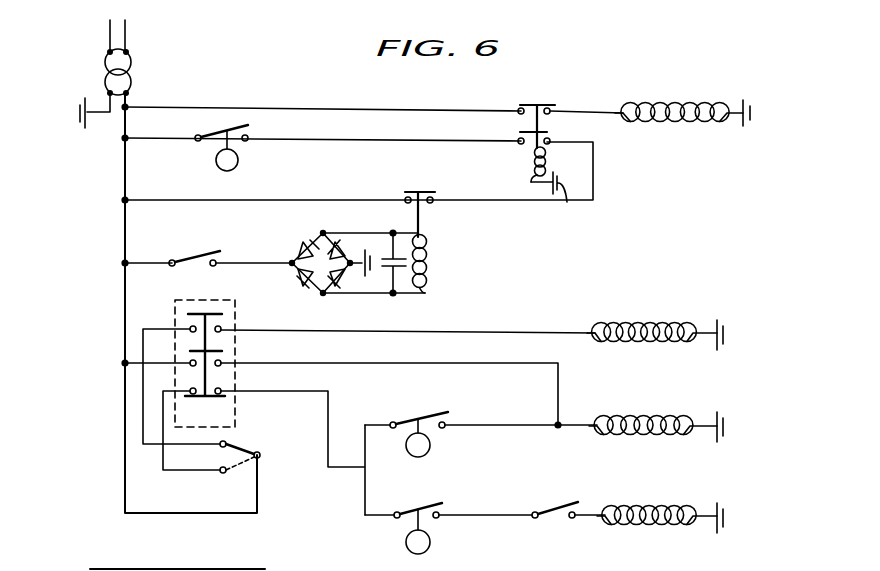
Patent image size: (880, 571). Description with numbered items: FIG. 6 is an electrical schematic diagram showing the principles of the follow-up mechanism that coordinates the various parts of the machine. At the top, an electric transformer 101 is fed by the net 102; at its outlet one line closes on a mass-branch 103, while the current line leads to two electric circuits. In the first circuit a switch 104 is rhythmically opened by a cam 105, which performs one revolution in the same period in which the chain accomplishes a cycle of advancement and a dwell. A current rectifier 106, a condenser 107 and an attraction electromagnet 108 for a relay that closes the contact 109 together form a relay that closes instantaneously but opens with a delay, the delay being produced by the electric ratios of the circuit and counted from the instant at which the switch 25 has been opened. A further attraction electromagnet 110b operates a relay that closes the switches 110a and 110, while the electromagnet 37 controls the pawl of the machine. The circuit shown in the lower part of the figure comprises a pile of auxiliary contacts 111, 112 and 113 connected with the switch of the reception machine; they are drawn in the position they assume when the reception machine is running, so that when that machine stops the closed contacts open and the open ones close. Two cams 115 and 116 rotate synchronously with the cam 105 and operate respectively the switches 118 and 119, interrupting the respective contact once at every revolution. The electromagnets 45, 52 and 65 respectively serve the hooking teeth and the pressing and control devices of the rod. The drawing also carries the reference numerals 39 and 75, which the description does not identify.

The electric transformer 101 is at (132, 60).
The net 102 is at (130, 18).
The mass-branch 103 is at (78, 128).
The switch 104 is at (222, 124).
The cam 105 is at (239, 160).
The current rectifier 106 is at (300, 258).
The condenser 107 is at (391, 283).
The attraction electromagnet 108 is at (430, 258).
The contact 109 is at (416, 191).
The switch 110 is at (545, 103).
The switch 110a is at (553, 133).
The attraction electromagnet 110b is at (532, 172).
The auxiliary contact 111 is at (236, 322).
The auxiliary contact 112 is at (238, 355).
The auxiliary contact 113 is at (235, 384).
The cam 115 is at (430, 447).
The cam 116 is at (430, 544).
The switch 118 is at (447, 413).
The switch 119 is at (440, 507).
The switch 25 is at (208, 256).
The electromagnet 37 is at (676, 122).
The switch 39 is at (553, 524).
The electromagnet 45 is at (652, 503).
The electromagnet 52 is at (650, 410).
The electromagnet 65 is at (645, 320).
The selector switch 75 is at (245, 444).